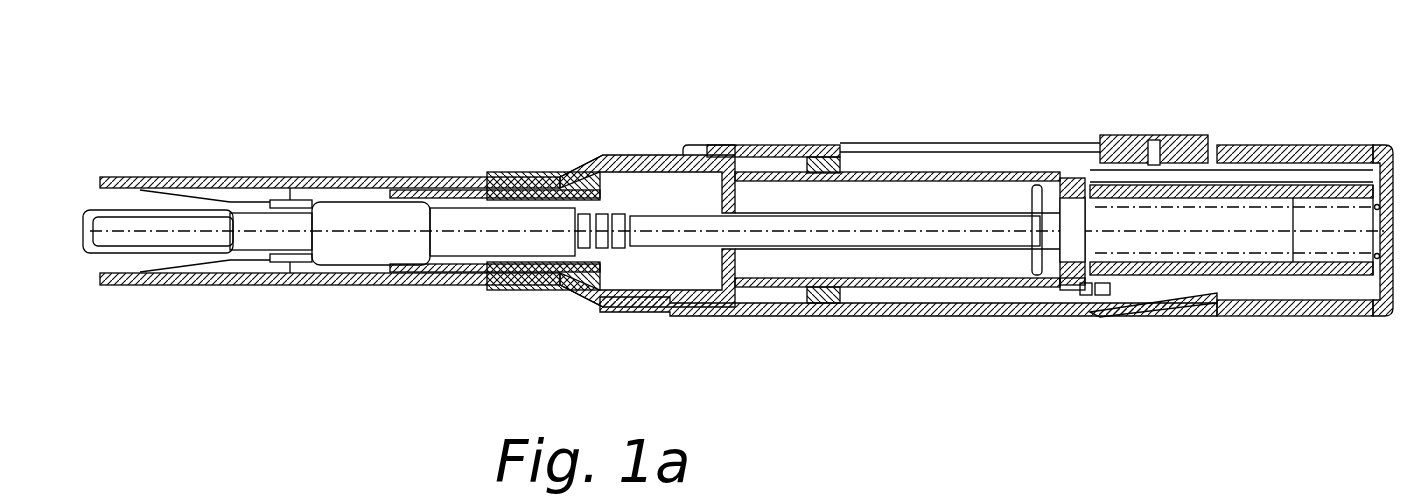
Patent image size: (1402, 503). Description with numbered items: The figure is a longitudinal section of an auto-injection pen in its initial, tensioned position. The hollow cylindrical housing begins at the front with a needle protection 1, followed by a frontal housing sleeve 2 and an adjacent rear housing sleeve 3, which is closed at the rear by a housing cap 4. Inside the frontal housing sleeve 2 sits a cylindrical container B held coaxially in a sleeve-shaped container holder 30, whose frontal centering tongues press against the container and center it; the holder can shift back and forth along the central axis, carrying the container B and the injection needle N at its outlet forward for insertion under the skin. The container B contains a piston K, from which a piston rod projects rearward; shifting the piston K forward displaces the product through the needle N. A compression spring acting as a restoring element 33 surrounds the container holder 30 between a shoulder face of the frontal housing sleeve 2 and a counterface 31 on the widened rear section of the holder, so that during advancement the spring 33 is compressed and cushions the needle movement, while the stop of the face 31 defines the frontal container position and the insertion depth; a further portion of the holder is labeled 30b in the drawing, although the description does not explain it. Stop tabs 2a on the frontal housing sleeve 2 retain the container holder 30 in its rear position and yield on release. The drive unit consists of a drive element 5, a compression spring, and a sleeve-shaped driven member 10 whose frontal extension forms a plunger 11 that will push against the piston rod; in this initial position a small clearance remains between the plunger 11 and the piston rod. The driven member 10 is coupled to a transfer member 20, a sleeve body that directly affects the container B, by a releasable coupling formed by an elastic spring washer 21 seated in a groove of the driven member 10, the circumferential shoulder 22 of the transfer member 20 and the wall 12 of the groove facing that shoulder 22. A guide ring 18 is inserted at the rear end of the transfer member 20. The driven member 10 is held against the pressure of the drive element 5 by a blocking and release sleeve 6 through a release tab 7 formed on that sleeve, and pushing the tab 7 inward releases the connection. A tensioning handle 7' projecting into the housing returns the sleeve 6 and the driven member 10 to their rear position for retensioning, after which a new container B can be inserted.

The injection needle N is at (198, 233).
The needle protection 1 is at (250, 285).
The frontal housing sleeve 2 is at (422, 162).
The stop tabs 2a is at (300, 285).
The cylindrical container B is at (518, 285).
The piston K is at (580, 214).
The container holder 30 is at (640, 188).
The sleeve shoulder 30b is at (427, 180).
The counterface 31 is at (700, 152).
The restoring element 33 is at (487, 178).
The transfer member 20 is at (902, 145).
The plunger 11 is at (1053, 172).
The elastic spring washer 21 is at (1078, 178).
The tensioning handle 7' is at (1154, 114).
The driven member 10 is at (1180, 195).
The blocking and release sleeve 6 is at (1367, 150).
The drive element 5 is at (1370, 283).
The housing cap 4 is at (1258, 306).
The release tab 7 is at (1153, 347).
The rear housing sleeve 3 is at (890, 306).
The circumferential shoulder 22 is at (1073, 288).
The wall of the groove 12 is at (1083, 284).
The guide ring 18 is at (1103, 288).